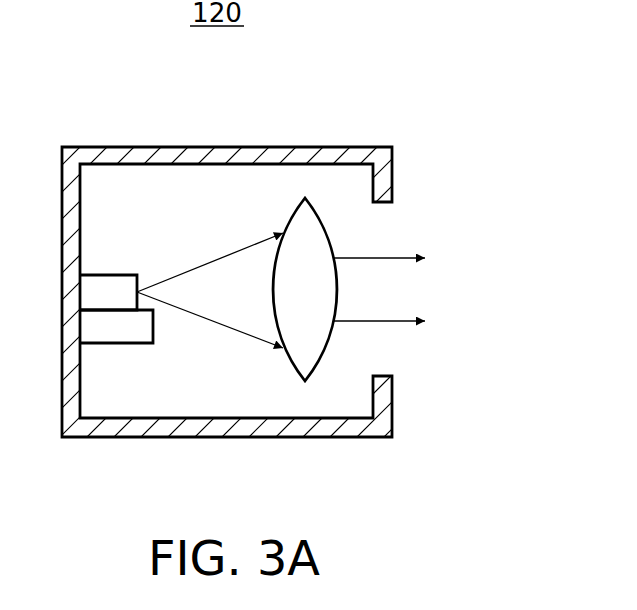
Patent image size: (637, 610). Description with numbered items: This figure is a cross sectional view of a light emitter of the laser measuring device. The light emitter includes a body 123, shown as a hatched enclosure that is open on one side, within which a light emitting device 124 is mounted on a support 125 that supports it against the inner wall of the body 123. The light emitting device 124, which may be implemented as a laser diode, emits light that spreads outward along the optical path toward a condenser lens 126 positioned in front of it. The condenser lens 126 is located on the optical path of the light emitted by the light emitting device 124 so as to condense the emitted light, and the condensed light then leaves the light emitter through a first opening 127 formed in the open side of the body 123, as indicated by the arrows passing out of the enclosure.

The body 123 is at (128, 147).
The light emitting device 124 is at (109, 275).
The support 125 is at (130, 344).
The condenser lens 126 is at (328, 238).
The first opening 127 is at (357, 352).